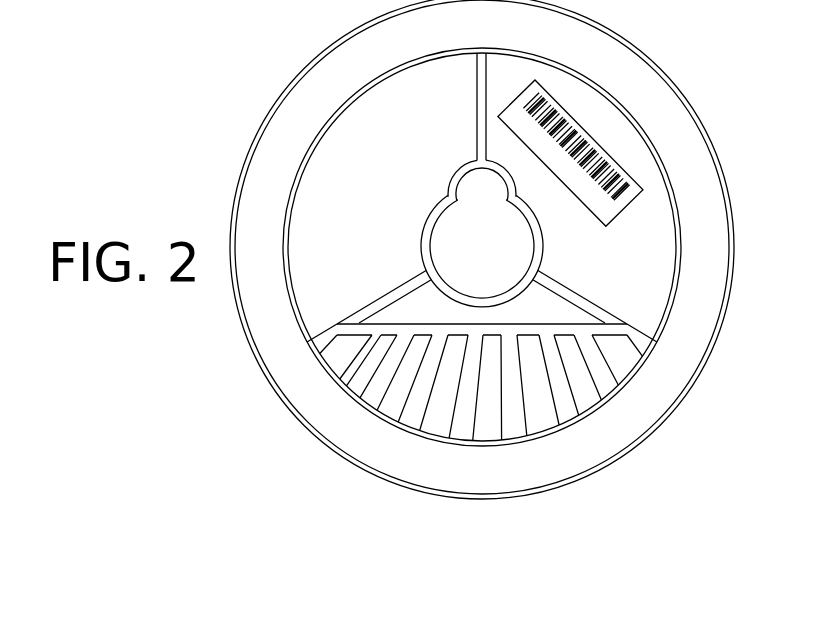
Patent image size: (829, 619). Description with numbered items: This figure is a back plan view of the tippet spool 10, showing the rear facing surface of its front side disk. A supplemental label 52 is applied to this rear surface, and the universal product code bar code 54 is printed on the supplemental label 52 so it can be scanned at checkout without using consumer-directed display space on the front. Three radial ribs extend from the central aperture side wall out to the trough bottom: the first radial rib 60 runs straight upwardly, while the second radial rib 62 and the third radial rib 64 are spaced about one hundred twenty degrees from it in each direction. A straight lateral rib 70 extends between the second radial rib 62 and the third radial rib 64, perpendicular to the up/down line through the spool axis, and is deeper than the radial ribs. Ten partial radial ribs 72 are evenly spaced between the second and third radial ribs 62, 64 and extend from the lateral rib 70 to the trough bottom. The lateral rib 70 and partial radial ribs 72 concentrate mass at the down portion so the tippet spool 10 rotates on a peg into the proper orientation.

The tippet spool 10 is at (234, 80).
The supplemental label 52 is at (622, 213).
The universal product code bar code 54 is at (609, 205).
The first radial rib 60 is at (476, 98).
The second radial rib 62 is at (595, 303).
The third radial rib 64 is at (378, 300).
The lateral rib 70 is at (423, 324).
The partial radial ribs 72 is at (372, 378).